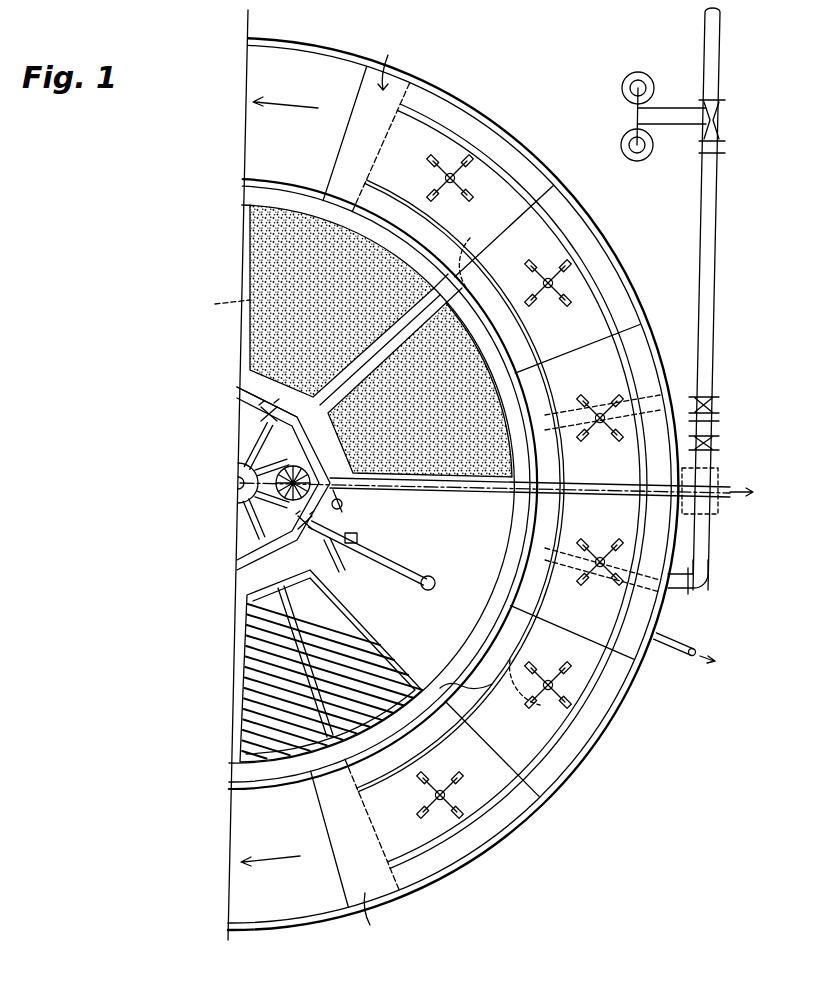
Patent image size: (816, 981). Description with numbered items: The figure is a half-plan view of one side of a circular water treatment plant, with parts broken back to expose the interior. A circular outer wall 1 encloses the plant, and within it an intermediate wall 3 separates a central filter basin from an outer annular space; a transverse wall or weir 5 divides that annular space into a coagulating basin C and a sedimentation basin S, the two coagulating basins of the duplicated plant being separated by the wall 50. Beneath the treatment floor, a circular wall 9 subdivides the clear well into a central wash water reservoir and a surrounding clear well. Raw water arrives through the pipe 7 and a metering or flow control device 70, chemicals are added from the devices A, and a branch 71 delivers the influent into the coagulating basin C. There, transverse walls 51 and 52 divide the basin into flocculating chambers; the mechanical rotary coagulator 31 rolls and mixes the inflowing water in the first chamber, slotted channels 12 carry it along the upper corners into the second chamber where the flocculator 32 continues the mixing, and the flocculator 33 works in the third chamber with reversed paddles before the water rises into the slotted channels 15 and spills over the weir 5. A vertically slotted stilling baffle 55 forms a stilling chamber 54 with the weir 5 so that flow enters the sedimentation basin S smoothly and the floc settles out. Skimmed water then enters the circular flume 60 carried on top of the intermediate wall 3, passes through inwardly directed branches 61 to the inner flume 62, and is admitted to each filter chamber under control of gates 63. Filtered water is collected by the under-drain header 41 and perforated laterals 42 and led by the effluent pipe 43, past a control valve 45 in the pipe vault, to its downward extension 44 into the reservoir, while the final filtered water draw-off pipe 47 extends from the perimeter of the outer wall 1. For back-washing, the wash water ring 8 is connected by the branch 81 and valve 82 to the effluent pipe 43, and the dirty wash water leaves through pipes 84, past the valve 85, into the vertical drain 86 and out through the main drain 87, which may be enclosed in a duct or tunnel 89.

The outer wall 1 is at (290, 930).
The intermediate wall 3 is at (244, 181).
The transverse wall or weir 5 is at (420, 98).
The pipe 7 is at (716, 75).
The wash water ring 8 is at (240, 566).
The circular wall 9 is at (225, 305).
The channels 12 is at (620, 305).
The slotted channels 15 is at (520, 155).
The mechanical rotary coagulator 31 is at (612, 437).
The mechanical flocculator 32 is at (568, 266).
The mechanical flocculator 33 is at (468, 158).
The header 41 is at (322, 755).
The perforated laterals 42 is at (272, 760).
The effluent pipe 43 is at (428, 592).
The downward extension 44 is at (350, 505).
The control valves 45 is at (360, 534).
The final filtered water draw-off pipe 47 is at (692, 640).
The wall 50 is at (598, 498).
The transverse wall 51 is at (570, 350).
The transverse wall 52 is at (495, 234).
The stilling chamber 54 is at (388, 488).
The stilling baffle 55 is at (345, 148).
The circular channel or flume 60 is at (456, 683).
The inwardly directed branches 61 is at (250, 262).
The inner circular or polygonal flume 62 is at (256, 385).
The gates 63 is at (292, 368).
The metering or flow control device 70 is at (717, 122).
The branch 71 is at (680, 590).
The branch 81 is at (340, 555).
The valve 82 is at (303, 524).
The pipes 84 is at (255, 433).
The valve 85 is at (262, 412).
The vertical drain 86 is at (230, 486).
The main drain 87 is at (722, 490).
The duct or tunnel 89 is at (716, 512).
The devices A is at (627, 80).
The coagulating basin C is at (575, 240).
The sedimentation basin S is at (270, 56).